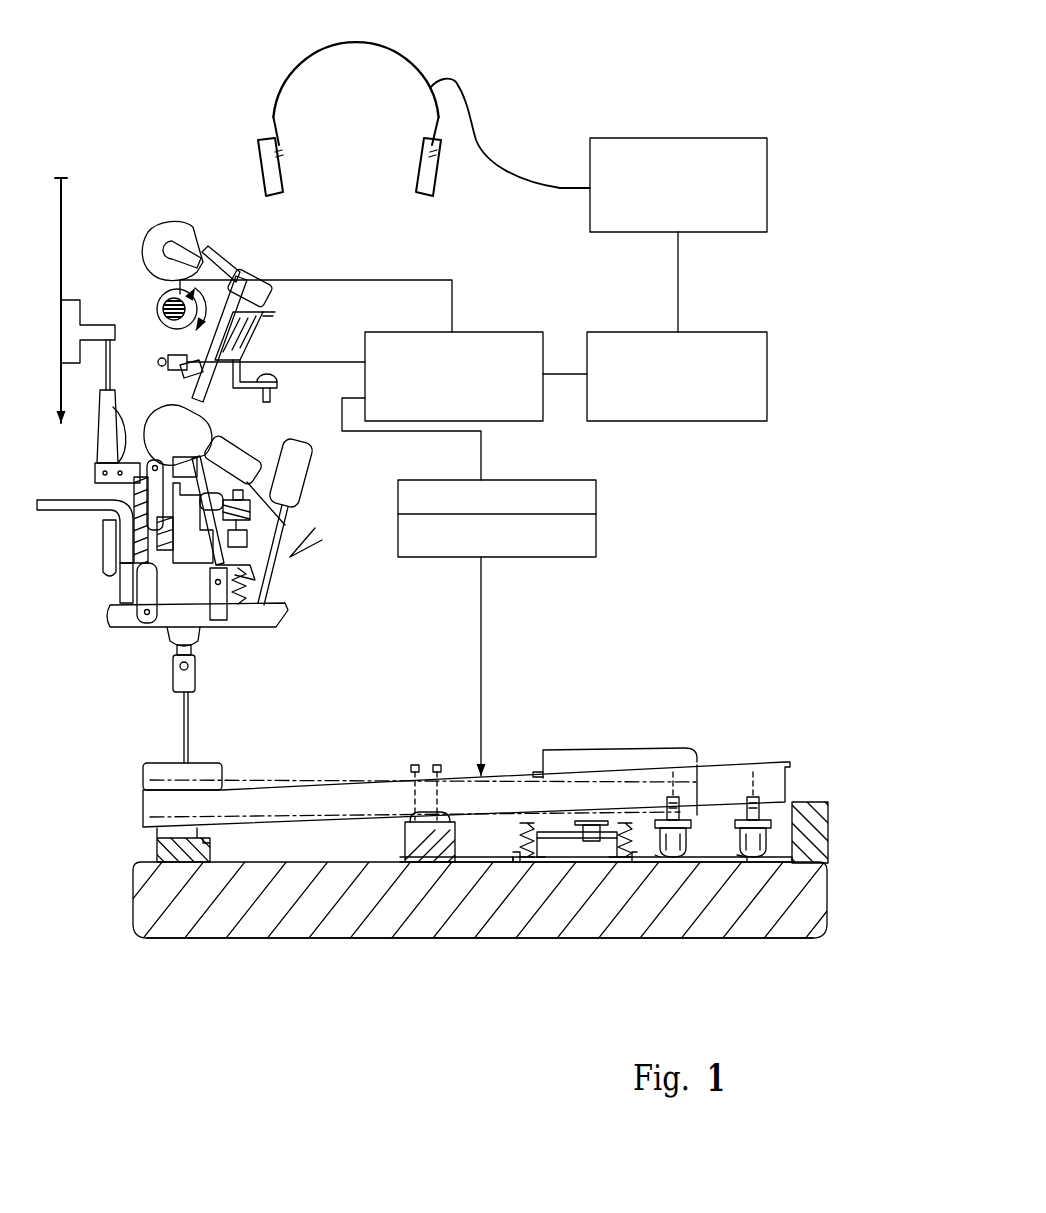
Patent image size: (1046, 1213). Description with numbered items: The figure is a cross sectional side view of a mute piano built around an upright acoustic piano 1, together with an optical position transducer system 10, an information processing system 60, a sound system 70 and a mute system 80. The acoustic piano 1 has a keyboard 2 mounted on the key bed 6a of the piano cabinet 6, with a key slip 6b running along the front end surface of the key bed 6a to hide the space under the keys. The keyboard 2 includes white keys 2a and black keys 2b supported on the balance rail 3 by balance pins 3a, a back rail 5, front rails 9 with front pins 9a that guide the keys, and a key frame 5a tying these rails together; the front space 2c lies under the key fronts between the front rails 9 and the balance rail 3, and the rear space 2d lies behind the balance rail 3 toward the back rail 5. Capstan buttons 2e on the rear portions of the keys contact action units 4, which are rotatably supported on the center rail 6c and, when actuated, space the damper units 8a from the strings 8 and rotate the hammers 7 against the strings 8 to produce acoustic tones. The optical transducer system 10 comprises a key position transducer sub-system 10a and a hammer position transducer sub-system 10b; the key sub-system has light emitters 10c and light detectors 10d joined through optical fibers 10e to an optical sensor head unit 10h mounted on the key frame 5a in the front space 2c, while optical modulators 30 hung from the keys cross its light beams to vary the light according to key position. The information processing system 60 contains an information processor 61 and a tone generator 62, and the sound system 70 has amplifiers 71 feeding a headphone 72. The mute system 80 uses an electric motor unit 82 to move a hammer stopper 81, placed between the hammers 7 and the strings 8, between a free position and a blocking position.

The acoustic piano 1 is at (463, 792).
The keyboard 2 is at (463, 826).
The white keys 2a is at (712, 761).
The black keys 2b is at (648, 752).
The front space 2c is at (696, 846).
The rear space 2d is at (290, 856).
The capstan buttons 2e is at (200, 676).
The balance rail 3 is at (414, 783).
The balance pins 3a is at (428, 770).
The action units 4 is at (243, 420).
The back rail 5 is at (463, 921).
The key frame 5a is at (497, 862).
The piano cabinet 6 is at (497, 850).
The key bed 6a is at (450, 938).
The key slip 6b is at (800, 802).
The center rail 6c is at (168, 560).
The hammers 7 is at (180, 218).
The strings 8 is at (85, 256).
The damper units 8a is at (74, 300).
The front rails 9 is at (701, 774).
The front pins 9a is at (667, 780).
The optical position transducer system 10 is at (523, 605).
The key position transducer sub-system 10a is at (397, 480).
The hammer position transducer sub-system 10b is at (158, 372).
The light emitters 10c is at (540, 481).
The light detectors 10d is at (575, 557).
The optical fibers 10e is at (481, 618).
The optical sensor head unit 10h is at (588, 911).
The optical modulators 30 is at (598, 842).
The information processing system 60 is at (588, 335).
The information processor 61 is at (498, 332).
The tone generator 62 is at (614, 332).
The sound system 70 is at (418, 98).
The amplifiers 71 is at (700, 137).
The headphone 72 is at (408, 58).
The mute system 80 is at (147, 259).
The hammer stopper 81 is at (167, 318).
The electric motor unit 82 is at (160, 303).